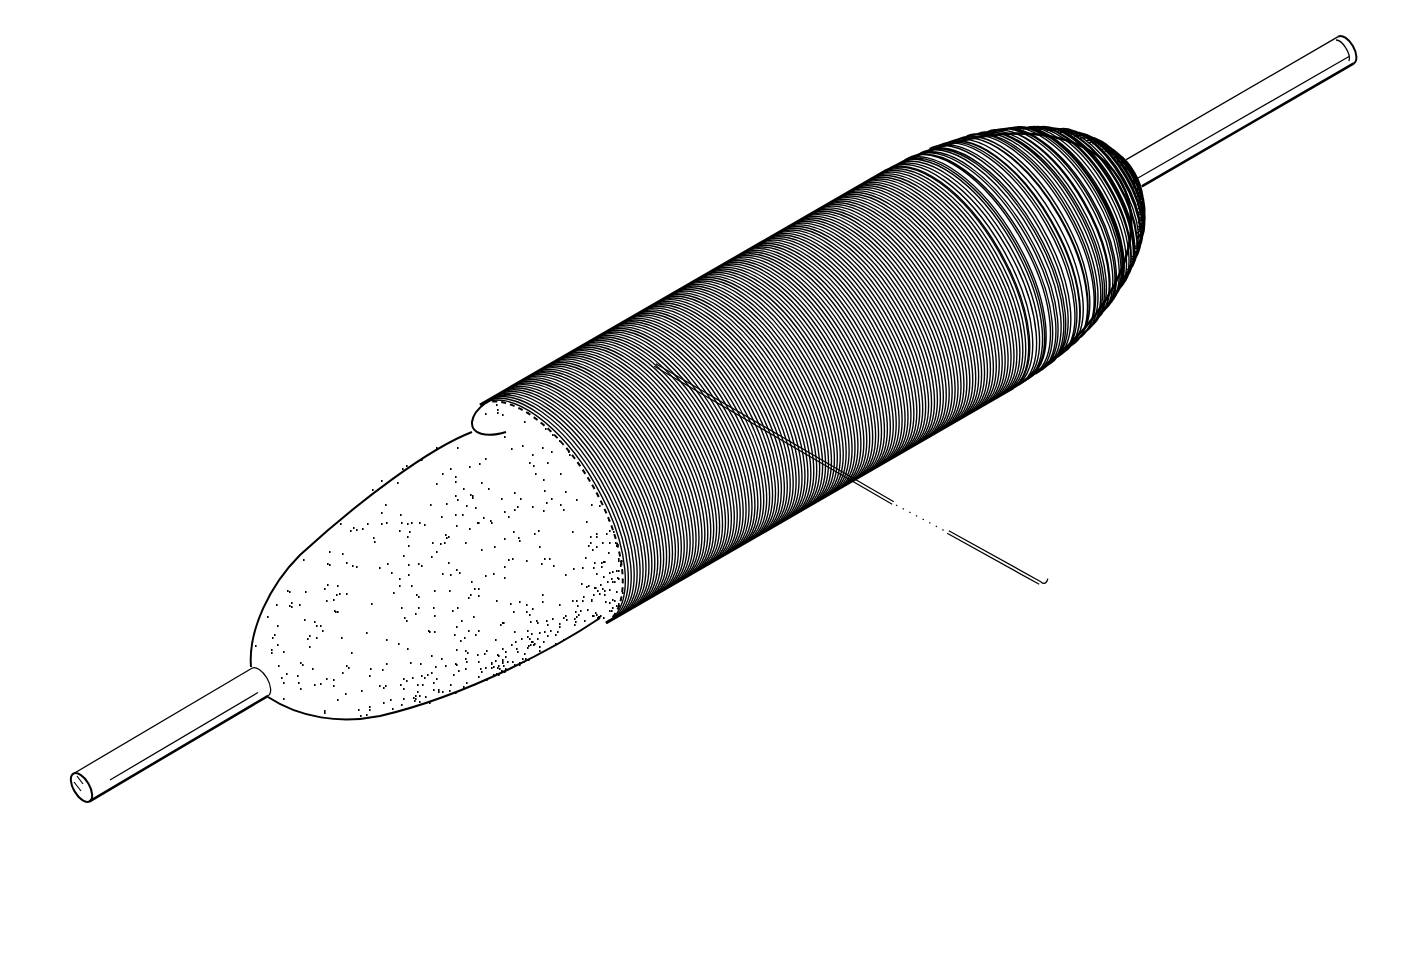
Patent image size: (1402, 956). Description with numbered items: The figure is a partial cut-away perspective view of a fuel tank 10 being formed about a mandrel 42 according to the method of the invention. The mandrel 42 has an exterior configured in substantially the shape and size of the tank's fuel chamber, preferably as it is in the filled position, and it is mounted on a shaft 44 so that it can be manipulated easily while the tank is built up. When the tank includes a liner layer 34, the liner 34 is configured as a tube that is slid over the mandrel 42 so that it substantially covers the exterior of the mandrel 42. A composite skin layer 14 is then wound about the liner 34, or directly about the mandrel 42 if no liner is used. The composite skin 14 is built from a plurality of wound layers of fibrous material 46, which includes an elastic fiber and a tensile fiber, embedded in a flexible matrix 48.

The fuel tank 10 is at (634, 178).
The composite skin layer 14 is at (492, 392).
The liner layer 34 is at (472, 441).
The mandrel 42 is at (440, 584).
The shaft 44 is at (1263, 104).
The fibrous material 46 is at (948, 532).
The flexible matrix 48 is at (665, 320).